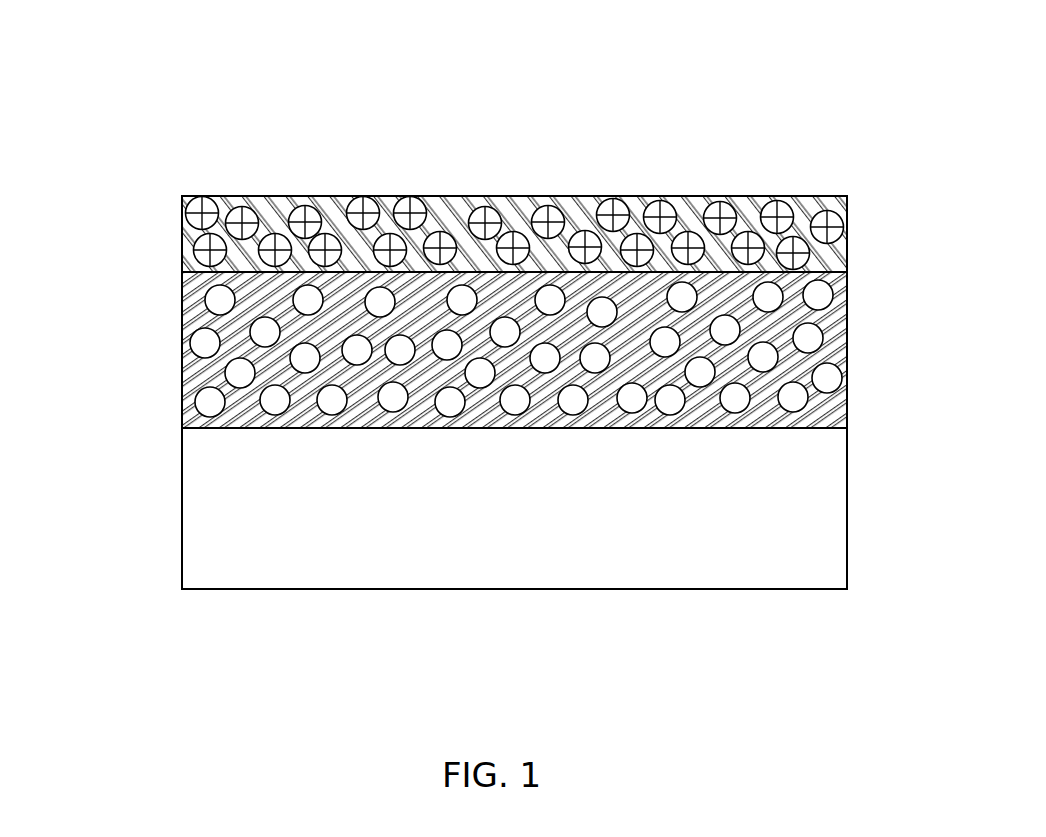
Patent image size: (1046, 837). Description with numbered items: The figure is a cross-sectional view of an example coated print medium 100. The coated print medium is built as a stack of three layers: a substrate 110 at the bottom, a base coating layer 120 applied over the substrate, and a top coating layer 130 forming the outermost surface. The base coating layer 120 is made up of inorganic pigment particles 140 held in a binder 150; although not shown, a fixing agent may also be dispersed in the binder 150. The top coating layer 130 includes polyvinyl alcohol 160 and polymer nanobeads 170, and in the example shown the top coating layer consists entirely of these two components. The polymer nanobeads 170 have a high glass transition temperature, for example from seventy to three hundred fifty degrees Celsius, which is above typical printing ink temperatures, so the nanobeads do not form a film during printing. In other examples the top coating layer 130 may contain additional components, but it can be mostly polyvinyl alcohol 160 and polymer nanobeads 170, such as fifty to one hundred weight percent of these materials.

The coated print medium 100 is at (183, 76).
The substrate 110 is at (553, 575).
The base coating layer 120 is at (157, 352).
The top coating layer 130 is at (157, 230).
The inorganic pigment particles 140 is at (825, 295).
The binder 150 is at (835, 325).
The polyvinyl alcohol 160 is at (578, 205).
The polymer nanobeads 170 is at (660, 206).